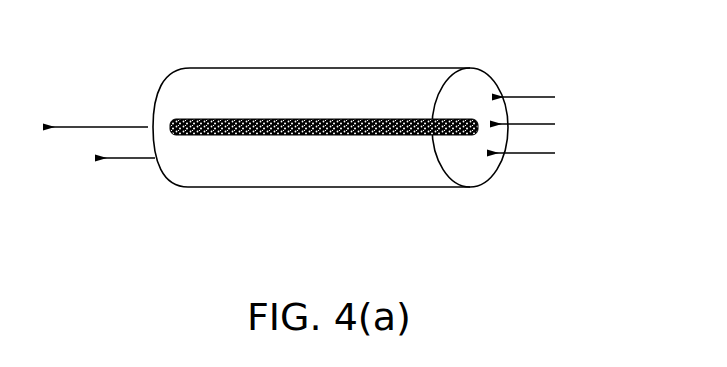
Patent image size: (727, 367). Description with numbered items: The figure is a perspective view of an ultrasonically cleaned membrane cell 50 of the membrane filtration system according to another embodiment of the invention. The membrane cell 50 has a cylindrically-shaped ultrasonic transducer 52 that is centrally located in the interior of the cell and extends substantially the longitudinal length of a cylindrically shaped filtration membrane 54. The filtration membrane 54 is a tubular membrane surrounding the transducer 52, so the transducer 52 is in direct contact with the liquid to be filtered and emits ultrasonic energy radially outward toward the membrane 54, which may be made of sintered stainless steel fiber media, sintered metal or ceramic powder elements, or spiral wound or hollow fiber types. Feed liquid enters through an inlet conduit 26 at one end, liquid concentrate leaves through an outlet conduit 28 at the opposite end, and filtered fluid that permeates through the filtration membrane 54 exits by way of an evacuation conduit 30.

The membrane cell 50 is at (387, 123).
The ultrasonic transducer 52 is at (347, 118).
The filtration membrane 54 is at (388, 186).
The inlet conduit 26 is at (542, 125).
The outlet conduit 28 is at (107, 125).
The evacuation conduit 30 is at (130, 163).